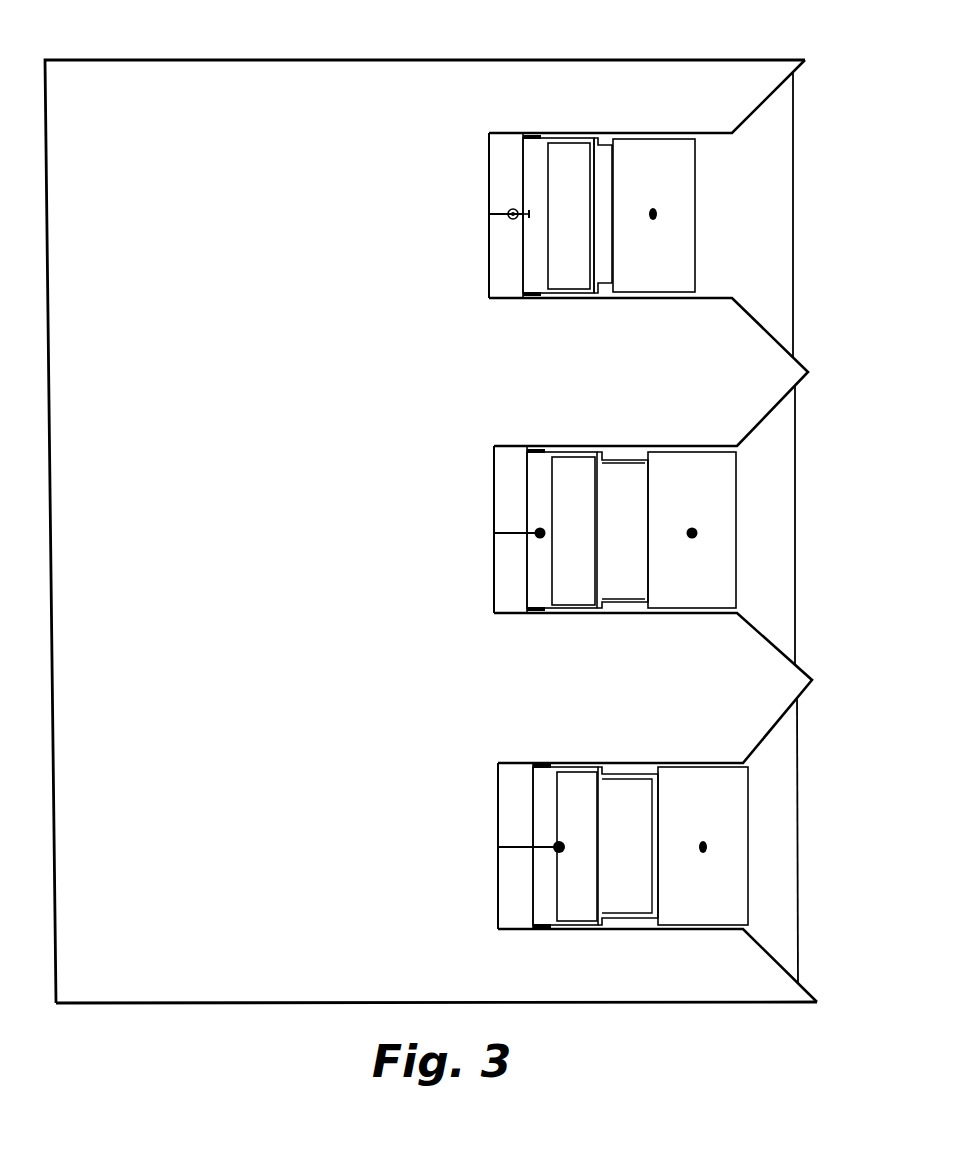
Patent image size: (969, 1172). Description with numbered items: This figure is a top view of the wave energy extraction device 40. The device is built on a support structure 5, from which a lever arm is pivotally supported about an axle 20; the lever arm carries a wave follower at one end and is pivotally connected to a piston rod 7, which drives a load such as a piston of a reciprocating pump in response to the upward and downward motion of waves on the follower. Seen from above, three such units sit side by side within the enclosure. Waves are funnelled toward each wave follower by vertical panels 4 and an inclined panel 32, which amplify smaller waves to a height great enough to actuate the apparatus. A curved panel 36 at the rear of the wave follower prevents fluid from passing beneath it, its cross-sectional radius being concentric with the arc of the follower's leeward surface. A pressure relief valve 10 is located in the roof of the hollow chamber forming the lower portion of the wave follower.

The support structure 5 is at (190, 123).
The wave energy extraction device 40 is at (130, 1028).
The vertical panels 4 is at (760, 740).
The inclined panel 32 is at (787, 898).
The axle 20 is at (530, 136).
The curved panel 36 is at (610, 180).
The piston rod 7 is at (516, 530).
The pressure relief valve 10 is at (692, 527).